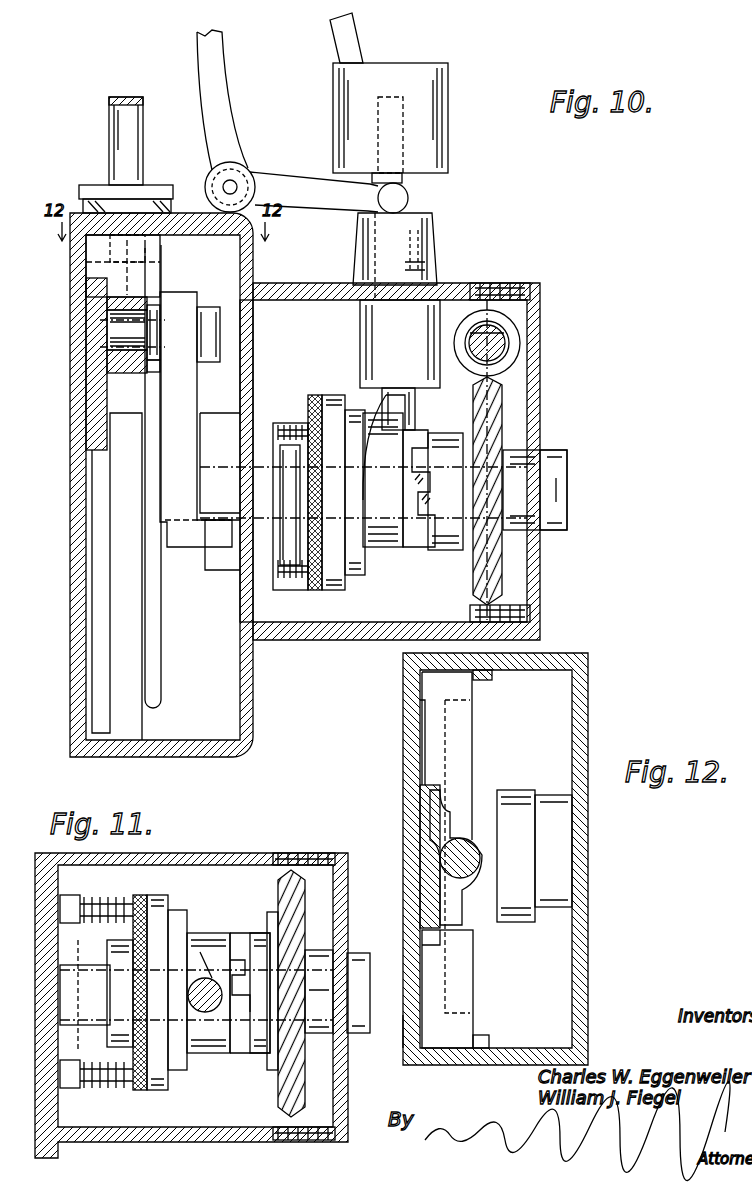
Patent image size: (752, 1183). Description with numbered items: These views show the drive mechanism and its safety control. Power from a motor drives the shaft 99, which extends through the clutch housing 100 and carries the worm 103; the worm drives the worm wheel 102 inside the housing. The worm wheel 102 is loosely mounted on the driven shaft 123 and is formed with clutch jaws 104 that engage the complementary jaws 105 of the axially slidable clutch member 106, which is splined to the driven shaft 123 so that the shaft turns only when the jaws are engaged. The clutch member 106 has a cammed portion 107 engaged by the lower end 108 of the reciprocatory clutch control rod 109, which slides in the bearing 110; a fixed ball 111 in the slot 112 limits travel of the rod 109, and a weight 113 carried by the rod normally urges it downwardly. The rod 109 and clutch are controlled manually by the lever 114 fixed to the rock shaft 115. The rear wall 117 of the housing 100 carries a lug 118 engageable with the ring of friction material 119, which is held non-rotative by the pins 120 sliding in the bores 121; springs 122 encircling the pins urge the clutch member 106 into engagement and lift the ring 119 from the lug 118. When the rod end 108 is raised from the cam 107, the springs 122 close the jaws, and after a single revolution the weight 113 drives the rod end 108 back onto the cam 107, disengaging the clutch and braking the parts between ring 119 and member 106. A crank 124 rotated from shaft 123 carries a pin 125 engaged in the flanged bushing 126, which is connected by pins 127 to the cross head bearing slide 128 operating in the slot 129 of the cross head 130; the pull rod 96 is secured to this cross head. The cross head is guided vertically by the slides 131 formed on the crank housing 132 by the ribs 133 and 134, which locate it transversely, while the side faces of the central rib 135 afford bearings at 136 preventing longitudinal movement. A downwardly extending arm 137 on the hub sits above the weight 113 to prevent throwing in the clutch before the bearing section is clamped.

In FIG. 10, the pull rod 96 is at (108, 140).
In FIG. 10, the drive shaft 99 is at (498, 336).
In FIG. 10, the clutch housing 100 is at (541, 588).
In FIG. 11, the clutch housing 100 is at (243, 853).
In FIG. 10, the worm wheel 102 is at (503, 410).
In FIG. 11, the worm wheel 102 is at (278, 890).
In FIG. 10, the worm 103 is at (510, 352).
In FIG. 10, the clutch jaws 104 is at (418, 508).
In FIG. 11, the clutch jaws 104 is at (233, 1005).
In FIG. 10, the complementary jaws 105 is at (410, 438).
In FIG. 11, the complementary jaws 105 is at (230, 950).
In FIG. 10, the clutch member 106 is at (386, 548).
In FIG. 11, the clutch member 106 is at (205, 932).
In FIG. 10, the cammed portion 107 is at (380, 450).
In FIG. 11, the cammed portion 107 is at (226, 935).
In FIG. 10, the lower end of clutch control rod 108 is at (362, 398).
In FIG. 11, the lower end of clutch control rod 108 is at (205, 1012).
In FIG. 10, the clutch control rod 109 is at (372, 257).
In FIG. 10, the bearing 110 is at (435, 235).
In FIG. 10, the fixed ball 111 is at (420, 246).
In FIG. 10, the slot 112 is at (428, 268).
In FIG. 10, the weight 113 is at (450, 98).
In FIG. 10, the lever 114 is at (305, 198).
In FIG. 10, the rock shaft 115 is at (240, 178).
In FIG. 10, the rear wall 117 is at (255, 360).
In FIG. 10, the lug 118 is at (282, 405).
In FIG. 11, the lug 118 is at (98, 975).
In FIG. 10, the friction ring 119 is at (316, 590).
In FIG. 11, the friction ring 119 is at (145, 1090).
In FIG. 10, the pins 120 is at (283, 587).
In FIG. 11, the pins 120 is at (92, 1089).
In FIG. 10, the bores 121 is at (286, 566).
In FIG. 11, the bores 121 is at (100, 1065).
In FIG. 10, the springs 122 is at (296, 592).
In FIG. 11, the springs 122 is at (113, 1090).
In FIG. 10, the driven shaft 123 is at (568, 458).
In FIG. 11, the driven shaft 123 is at (357, 950).
In FIG. 10, the crank 124 is at (190, 405).
In FIG. 12, the crank 124 is at (518, 797).
In FIG. 10, the pin 125 is at (208, 302).
In FIG. 10, the flanged bushing 126 is at (152, 372).
In FIG. 10, the pins 127 is at (140, 300).
In FIG. 10, the cross head bearing slide 128 is at (142, 307).
In FIG. 12, the cross head bearing slide 128 is at (460, 808).
In FIG. 10, the slot 129 is at (153, 333).
In FIG. 12, the slot 129 is at (460, 719).
In FIG. 10, the cross head 130 is at (95, 256).
In FIG. 12, the cross head 130 is at (475, 746).
In FIG. 10, the slides 131 is at (123, 657).
In FIG. 12, the slides 131 is at (452, 1048).
In FIG. 10, the crank housing 132 is at (205, 748).
In FIG. 12, the crank housing 132 is at (578, 655).
In FIG. 10, the rib 133 is at (162, 675).
In FIG. 12, the rib 133 is at (488, 1036).
In FIG. 12, the rib 134 is at (403, 1020).
In FIG. 10, the central rib 135 is at (86, 442).
In FIG. 12, the central rib 135 is at (430, 823).
In FIG. 12, the bearings 136 is at (427, 768).
In FIG. 10, the arm 137 is at (338, 47).